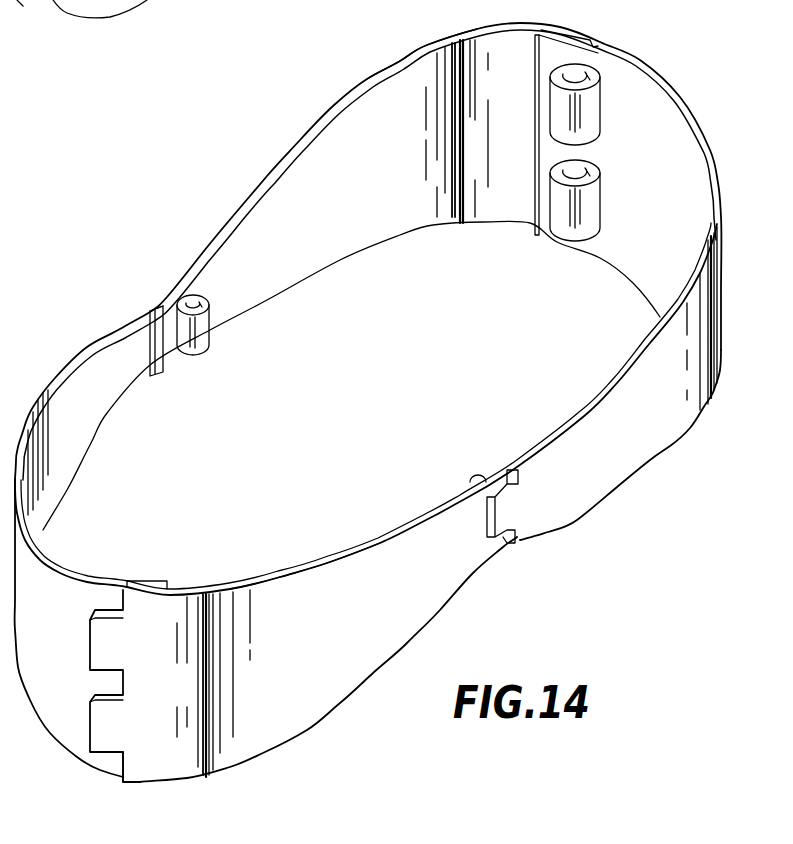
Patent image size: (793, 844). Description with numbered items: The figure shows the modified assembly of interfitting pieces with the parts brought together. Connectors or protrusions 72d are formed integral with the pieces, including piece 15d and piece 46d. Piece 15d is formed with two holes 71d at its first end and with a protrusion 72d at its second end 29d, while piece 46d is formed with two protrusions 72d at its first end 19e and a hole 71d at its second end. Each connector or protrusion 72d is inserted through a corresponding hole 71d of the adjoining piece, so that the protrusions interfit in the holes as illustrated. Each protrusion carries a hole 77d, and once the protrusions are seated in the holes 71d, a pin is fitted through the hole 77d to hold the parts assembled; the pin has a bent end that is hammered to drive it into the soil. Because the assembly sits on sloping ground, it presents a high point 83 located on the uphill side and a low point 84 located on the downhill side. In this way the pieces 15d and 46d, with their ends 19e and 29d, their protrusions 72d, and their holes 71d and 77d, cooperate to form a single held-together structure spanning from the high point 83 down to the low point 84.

The piece 15d is at (652, 105).
The first end 19e is at (412, 78).
The piece 46d is at (296, 583).
The high point 83 is at (590, 52).
The hole 77d is at (575, 71).
The hole 71d is at (597, 113).
The protrusion 72d is at (563, 210).
The second end 29d is at (537, 517).
The low point 84 is at (123, 786).